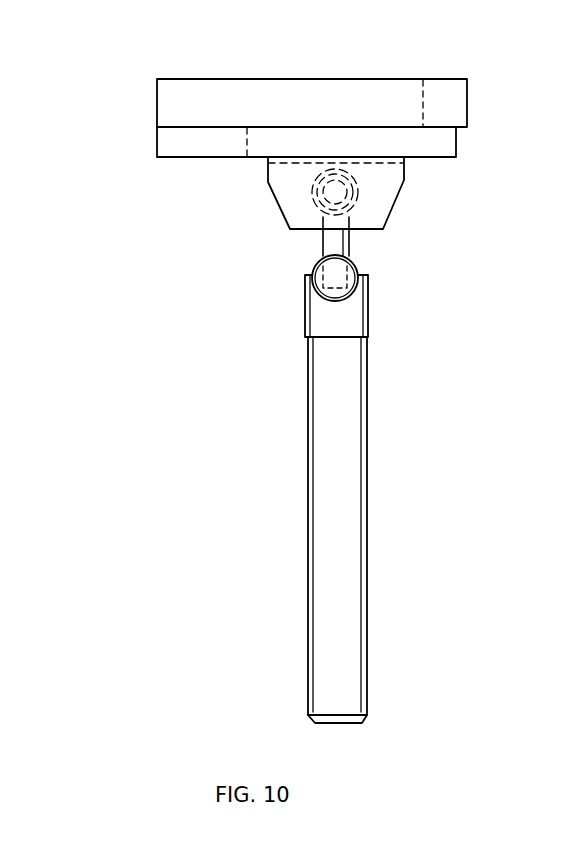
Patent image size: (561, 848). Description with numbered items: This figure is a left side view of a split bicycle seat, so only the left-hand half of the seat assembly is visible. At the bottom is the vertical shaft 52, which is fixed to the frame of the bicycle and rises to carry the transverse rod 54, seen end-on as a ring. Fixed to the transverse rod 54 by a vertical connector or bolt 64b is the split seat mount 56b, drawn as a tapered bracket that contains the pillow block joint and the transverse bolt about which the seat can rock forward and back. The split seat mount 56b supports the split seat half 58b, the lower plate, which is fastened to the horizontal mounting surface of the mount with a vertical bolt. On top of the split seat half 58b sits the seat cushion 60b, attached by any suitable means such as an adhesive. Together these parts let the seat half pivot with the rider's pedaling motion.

The vertical shaft 52 is at (367, 398).
The transverse rod 54 is at (358, 267).
The split seat mount 56b is at (392, 187).
The split seat half 58b is at (173, 157).
The seat cushion 60b is at (358, 79).
The vertical connector or bolt 64b is at (350, 243).